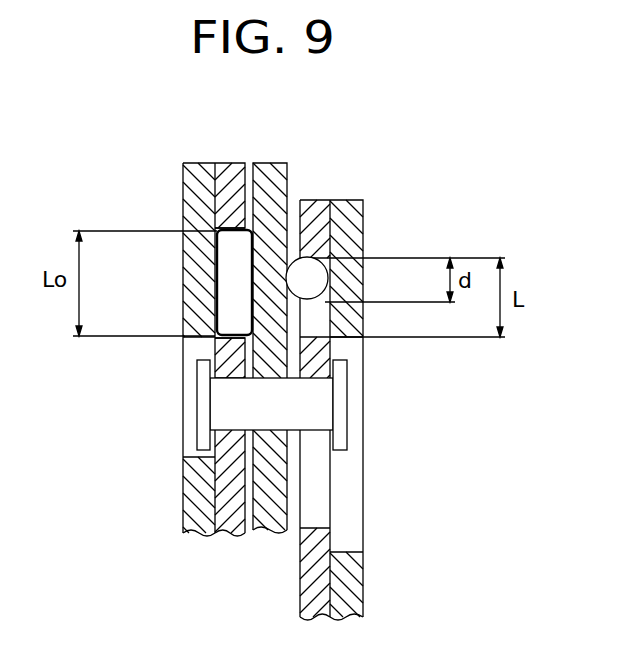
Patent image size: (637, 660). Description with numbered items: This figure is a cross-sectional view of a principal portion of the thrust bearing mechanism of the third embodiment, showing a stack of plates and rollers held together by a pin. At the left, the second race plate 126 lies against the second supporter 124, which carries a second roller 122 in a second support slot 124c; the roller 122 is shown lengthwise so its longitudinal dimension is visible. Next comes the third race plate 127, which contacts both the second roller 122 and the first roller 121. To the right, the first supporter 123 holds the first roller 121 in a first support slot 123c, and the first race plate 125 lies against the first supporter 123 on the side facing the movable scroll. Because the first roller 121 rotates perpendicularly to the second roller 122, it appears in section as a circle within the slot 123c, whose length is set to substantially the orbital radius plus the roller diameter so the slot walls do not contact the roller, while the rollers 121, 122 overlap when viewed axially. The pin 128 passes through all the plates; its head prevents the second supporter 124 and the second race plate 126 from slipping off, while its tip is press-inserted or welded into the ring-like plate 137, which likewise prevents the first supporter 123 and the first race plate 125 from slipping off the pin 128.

The first set of cylindrically shaped rollers 121 is at (326, 285).
The second set of cylindrically shaped rollers 122 is at (228, 283).
The first supporter 123 is at (313, 207).
The first set of support slots 123c is at (314, 339).
The second supporter 124 is at (232, 170).
The second set of support slots 124c is at (213, 227).
The first race plate 125 is at (345, 207).
The second race plate 126 is at (192, 178).
The third race plate 127 is at (270, 170).
The pin 128 is at (222, 409).
The ring-like plate 137 is at (346, 438).